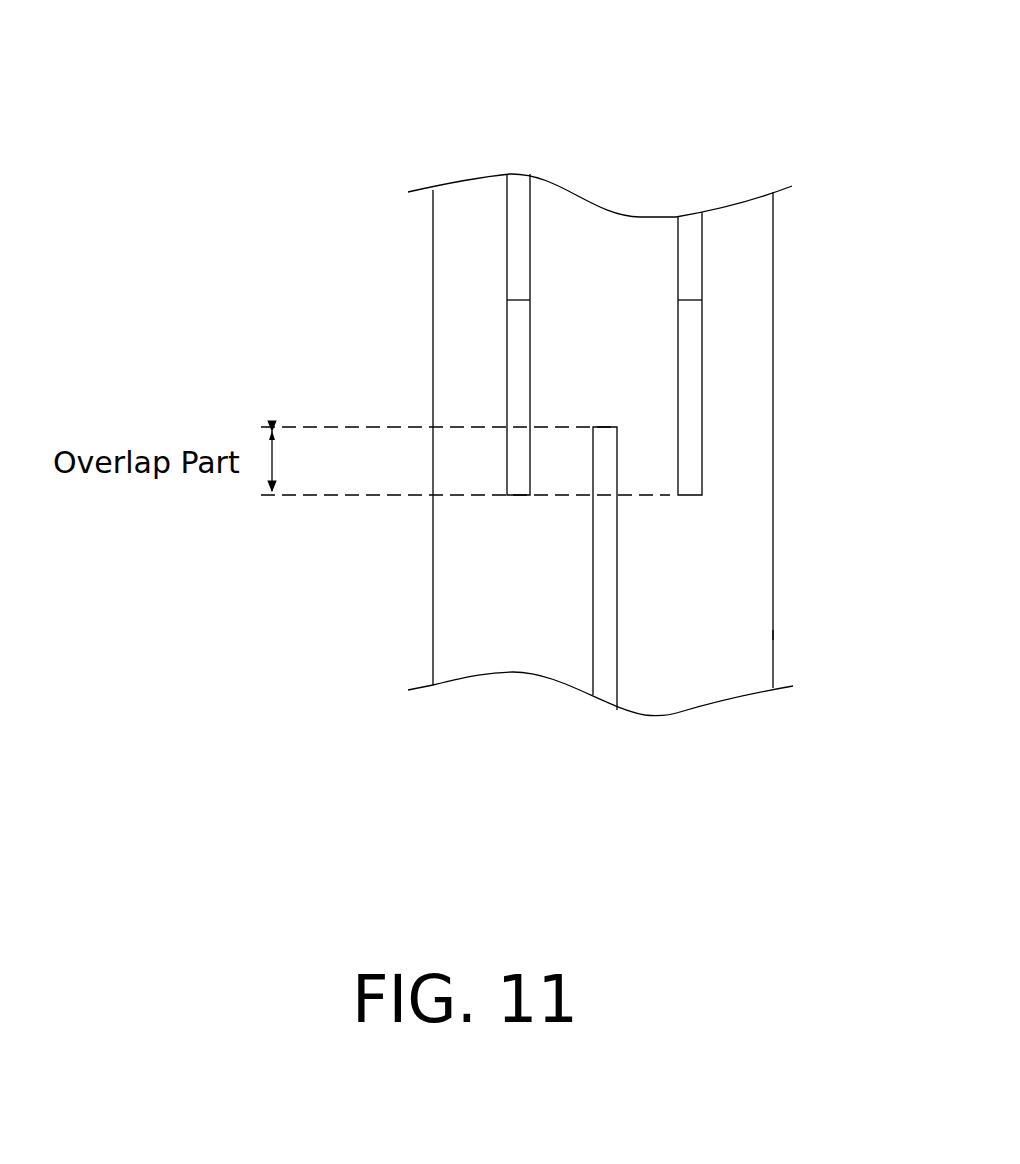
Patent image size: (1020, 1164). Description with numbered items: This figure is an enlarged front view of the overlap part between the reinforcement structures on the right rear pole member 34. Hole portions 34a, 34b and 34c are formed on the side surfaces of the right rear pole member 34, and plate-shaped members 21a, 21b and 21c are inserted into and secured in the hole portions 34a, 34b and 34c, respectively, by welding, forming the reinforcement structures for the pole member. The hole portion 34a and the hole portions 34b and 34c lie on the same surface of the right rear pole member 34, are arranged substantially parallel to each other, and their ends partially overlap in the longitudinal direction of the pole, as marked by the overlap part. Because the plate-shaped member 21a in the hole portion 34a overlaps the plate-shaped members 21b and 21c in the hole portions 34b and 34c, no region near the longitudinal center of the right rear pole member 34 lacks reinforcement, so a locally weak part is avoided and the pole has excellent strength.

The right rear pole member 34 is at (437, 120).
The hole portion 34a is at (593, 622).
The hole portion 34b is at (506, 283).
The hole portion 34c is at (671, 369).
The plate-shaped member 21a is at (612, 640).
The plate-shaped member 21b is at (522, 302).
The plate-shaped member 21c is at (692, 377).